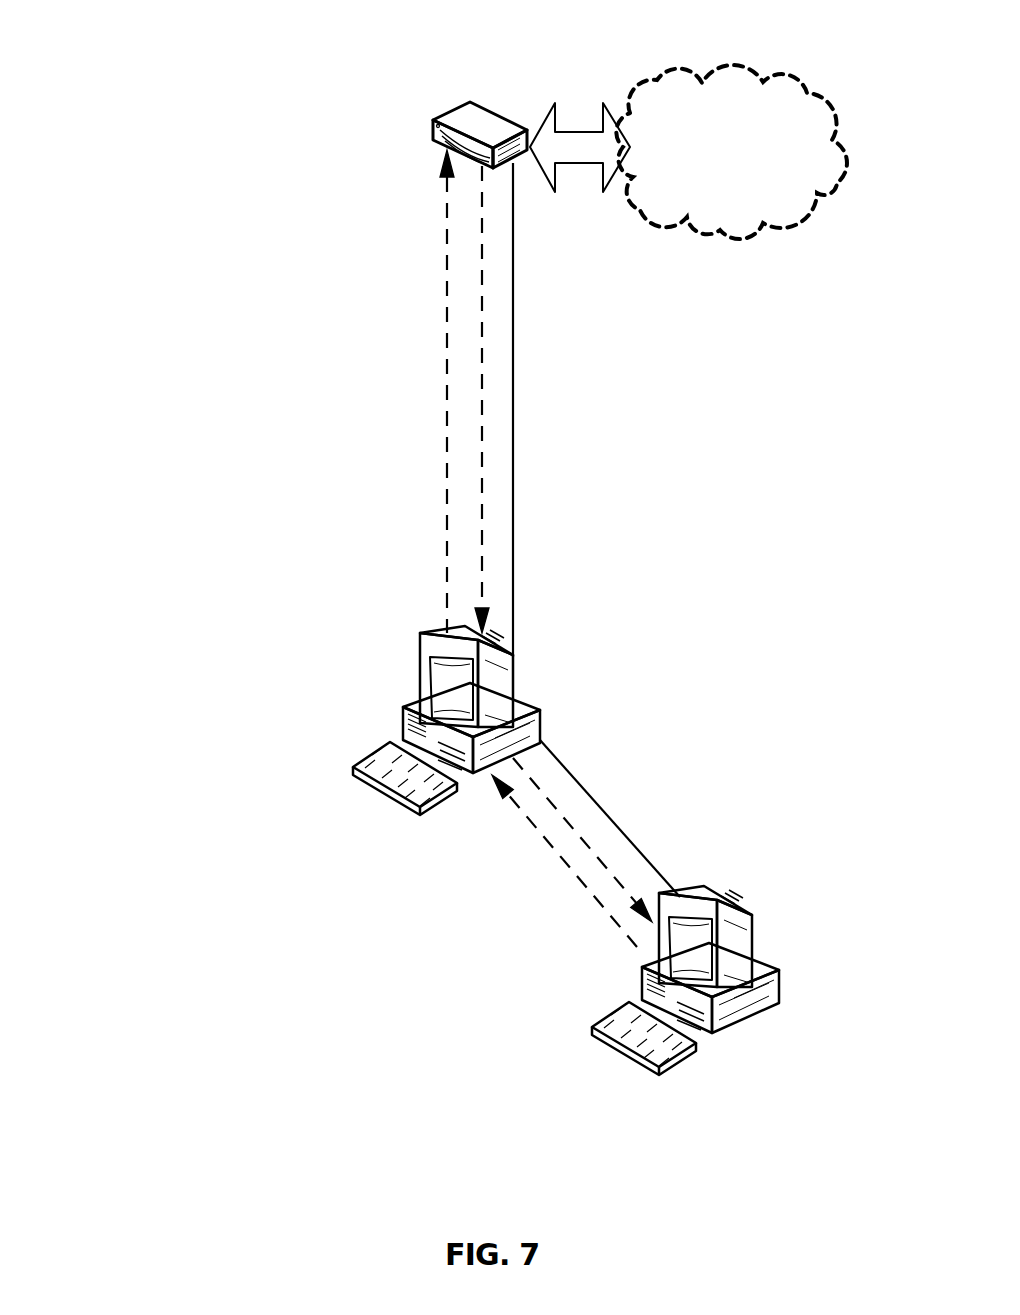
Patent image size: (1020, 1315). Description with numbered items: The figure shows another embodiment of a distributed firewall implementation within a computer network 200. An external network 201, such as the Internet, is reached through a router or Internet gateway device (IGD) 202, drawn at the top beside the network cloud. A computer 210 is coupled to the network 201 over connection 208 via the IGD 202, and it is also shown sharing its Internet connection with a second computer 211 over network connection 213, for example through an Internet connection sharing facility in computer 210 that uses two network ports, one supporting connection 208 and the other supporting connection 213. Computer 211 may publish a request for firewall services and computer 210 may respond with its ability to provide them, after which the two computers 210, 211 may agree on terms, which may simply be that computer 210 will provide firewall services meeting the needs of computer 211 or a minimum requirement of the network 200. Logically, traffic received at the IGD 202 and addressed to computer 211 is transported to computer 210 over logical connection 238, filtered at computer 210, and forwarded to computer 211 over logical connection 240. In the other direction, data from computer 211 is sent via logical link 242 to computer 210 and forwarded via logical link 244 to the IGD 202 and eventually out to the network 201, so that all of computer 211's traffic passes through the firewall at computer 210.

The computer network 200 is at (178, 318).
The external network 201 is at (720, 247).
The Internet gateway device 202 is at (442, 110).
The second downstream connection 208 is at (512, 418).
The computer 210 is at (418, 698).
The computer 211 is at (757, 918).
The network connection 213 is at (620, 827).
The logical connection 238 is at (480, 495).
The logical connection 240 is at (620, 887).
The logical link 242 is at (563, 860).
The logical link 244 is at (443, 332).